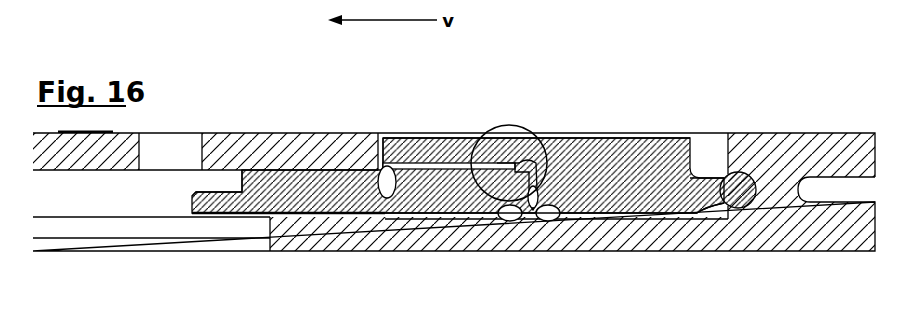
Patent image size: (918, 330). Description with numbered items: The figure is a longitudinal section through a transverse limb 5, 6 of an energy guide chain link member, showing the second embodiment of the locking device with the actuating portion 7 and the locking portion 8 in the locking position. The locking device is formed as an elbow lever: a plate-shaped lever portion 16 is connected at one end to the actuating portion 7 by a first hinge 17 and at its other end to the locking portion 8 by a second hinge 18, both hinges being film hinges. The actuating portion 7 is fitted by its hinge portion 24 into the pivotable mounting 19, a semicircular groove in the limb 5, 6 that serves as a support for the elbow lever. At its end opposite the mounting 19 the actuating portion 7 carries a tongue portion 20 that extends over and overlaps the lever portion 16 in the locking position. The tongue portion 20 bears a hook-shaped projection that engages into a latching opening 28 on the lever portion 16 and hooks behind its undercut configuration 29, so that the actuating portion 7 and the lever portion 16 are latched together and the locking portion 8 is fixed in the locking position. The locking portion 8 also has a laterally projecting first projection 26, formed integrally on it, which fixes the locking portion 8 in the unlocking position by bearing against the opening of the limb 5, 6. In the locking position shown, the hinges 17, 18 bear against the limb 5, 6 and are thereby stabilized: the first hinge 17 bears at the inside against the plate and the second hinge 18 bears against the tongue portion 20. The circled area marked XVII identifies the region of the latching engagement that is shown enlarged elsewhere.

The upper limb 5 is at (454, 141).
The lower limb 6 is at (594, 84).
The actuating portion 7 is at (634, 218).
The locking portion 8 is at (310, 190).
The lever portion 16 is at (429, 216).
The first hinge 17 is at (535, 214).
The second hinge 18 is at (385, 162).
The pivotable mounting 19 is at (746, 190).
The tongue portion 20 is at (440, 153).
The hinge portion 24 is at (738, 200).
The first projection 26 is at (491, 190).
The latching opening 28 is at (505, 172).
The undercut configuration 29 is at (514, 171).
The detail circle XVII is at (497, 128).